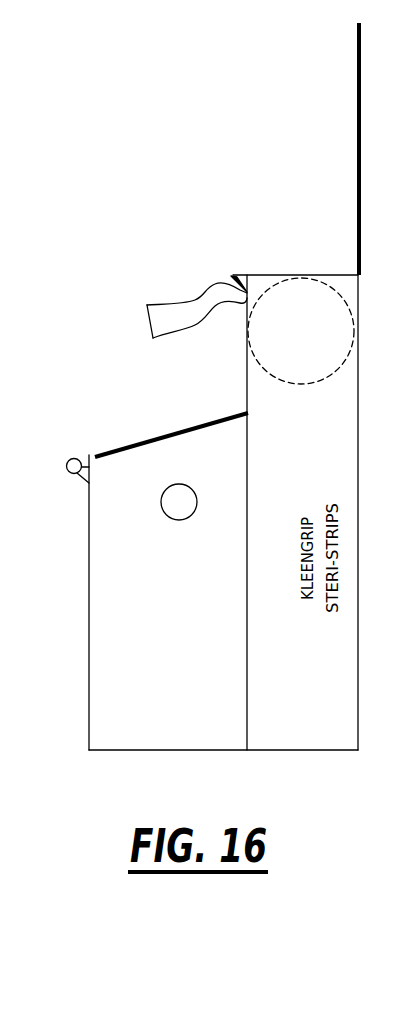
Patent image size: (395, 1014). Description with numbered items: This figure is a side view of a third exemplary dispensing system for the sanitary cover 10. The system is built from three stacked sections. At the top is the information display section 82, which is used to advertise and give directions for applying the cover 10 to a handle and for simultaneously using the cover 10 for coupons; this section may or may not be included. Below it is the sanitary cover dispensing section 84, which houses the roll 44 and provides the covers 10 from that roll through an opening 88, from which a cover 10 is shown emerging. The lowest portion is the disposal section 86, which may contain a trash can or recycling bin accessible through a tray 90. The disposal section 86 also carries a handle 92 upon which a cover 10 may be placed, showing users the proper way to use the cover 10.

The sanitary cover 10 is at (152, 298).
The roll 44 is at (317, 277).
The information display section 82 is at (357, 78).
The sanitary cover dispensing section 84 is at (247, 353).
The disposal section 86 is at (87, 538).
The opening 88 is at (232, 277).
The tray 90 is at (108, 446).
The handle 92 is at (68, 472).